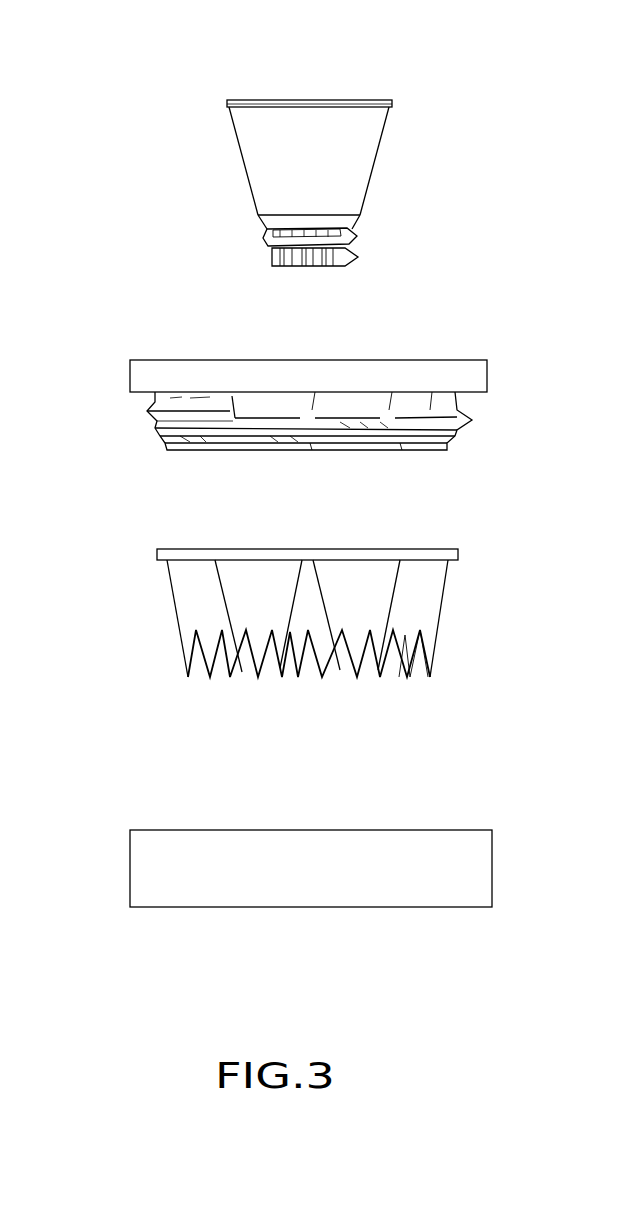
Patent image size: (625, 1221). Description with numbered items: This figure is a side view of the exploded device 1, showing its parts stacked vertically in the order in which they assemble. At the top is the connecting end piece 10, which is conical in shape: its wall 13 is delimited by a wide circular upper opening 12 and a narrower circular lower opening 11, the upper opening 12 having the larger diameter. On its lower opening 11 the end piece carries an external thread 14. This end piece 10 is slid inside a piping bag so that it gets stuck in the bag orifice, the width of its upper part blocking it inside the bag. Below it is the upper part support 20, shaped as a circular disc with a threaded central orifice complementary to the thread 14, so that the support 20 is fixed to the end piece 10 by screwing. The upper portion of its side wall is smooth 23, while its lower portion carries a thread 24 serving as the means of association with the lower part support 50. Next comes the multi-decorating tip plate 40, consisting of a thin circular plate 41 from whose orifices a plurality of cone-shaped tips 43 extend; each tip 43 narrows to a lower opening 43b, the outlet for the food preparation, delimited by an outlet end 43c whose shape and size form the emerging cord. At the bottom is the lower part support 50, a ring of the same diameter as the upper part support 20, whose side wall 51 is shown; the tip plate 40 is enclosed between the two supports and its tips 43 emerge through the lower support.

The device 1 is at (141, 82).
The connecting end piece 10 is at (397, 154).
The lower opening 11 is at (302, 267).
The upper opening 12 is at (293, 100).
The wall 13 is at (245, 175).
The external thread 14 is at (266, 241).
The upper part support 20 is at (468, 345).
The smooth side wall 23 is at (130, 375).
The thread 24 is at (147, 413).
The multi-decorating tip plate 40 is at (458, 529).
The circular plate 41 is at (157, 553).
The tip 43 is at (170, 595).
The lower opening 43b is at (362, 672).
The outlet end 43c is at (427, 673).
The lower part support 50 is at (469, 798).
The side wall 51 is at (130, 868).